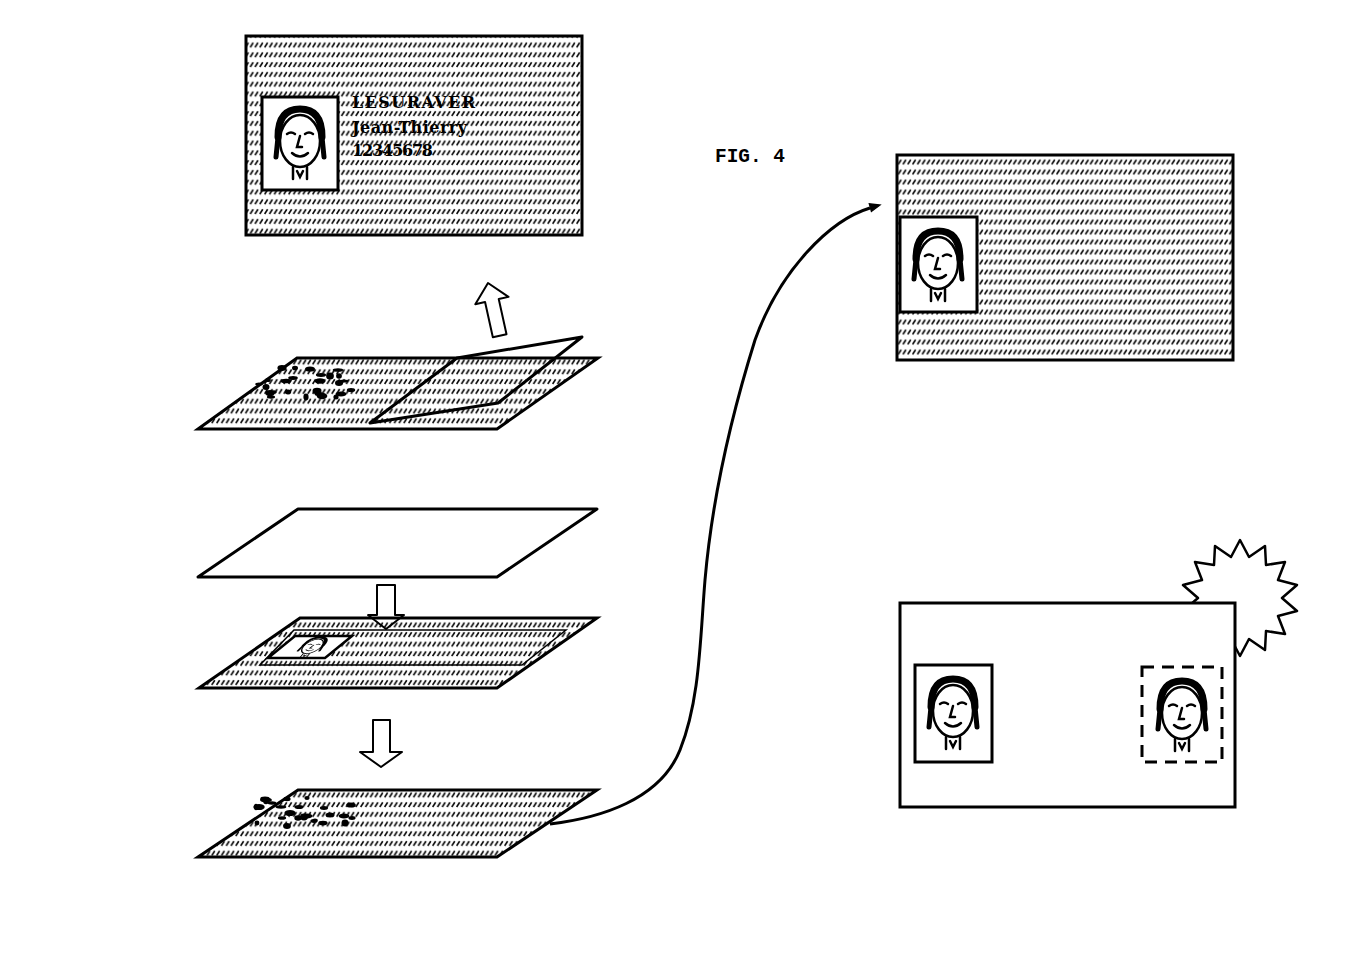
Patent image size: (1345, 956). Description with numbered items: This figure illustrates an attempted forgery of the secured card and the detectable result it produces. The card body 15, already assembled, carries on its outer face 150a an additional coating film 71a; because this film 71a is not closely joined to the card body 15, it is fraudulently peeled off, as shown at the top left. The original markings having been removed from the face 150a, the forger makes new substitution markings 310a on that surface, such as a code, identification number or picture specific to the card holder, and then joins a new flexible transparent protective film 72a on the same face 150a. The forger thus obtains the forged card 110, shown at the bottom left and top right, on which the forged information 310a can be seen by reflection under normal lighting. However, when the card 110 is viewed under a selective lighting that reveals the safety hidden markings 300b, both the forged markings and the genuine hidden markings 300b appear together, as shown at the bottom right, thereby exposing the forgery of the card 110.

The card body 15 is at (519, 662).
The coating film 71a is at (555, 332).
The new film 72a is at (516, 522).
The forged card 110 is at (491, 840).
The outer face 150a is at (260, 685).
The safety hidden markings 300b is at (1136, 768).
The substitution markings 310a is at (393, 644).